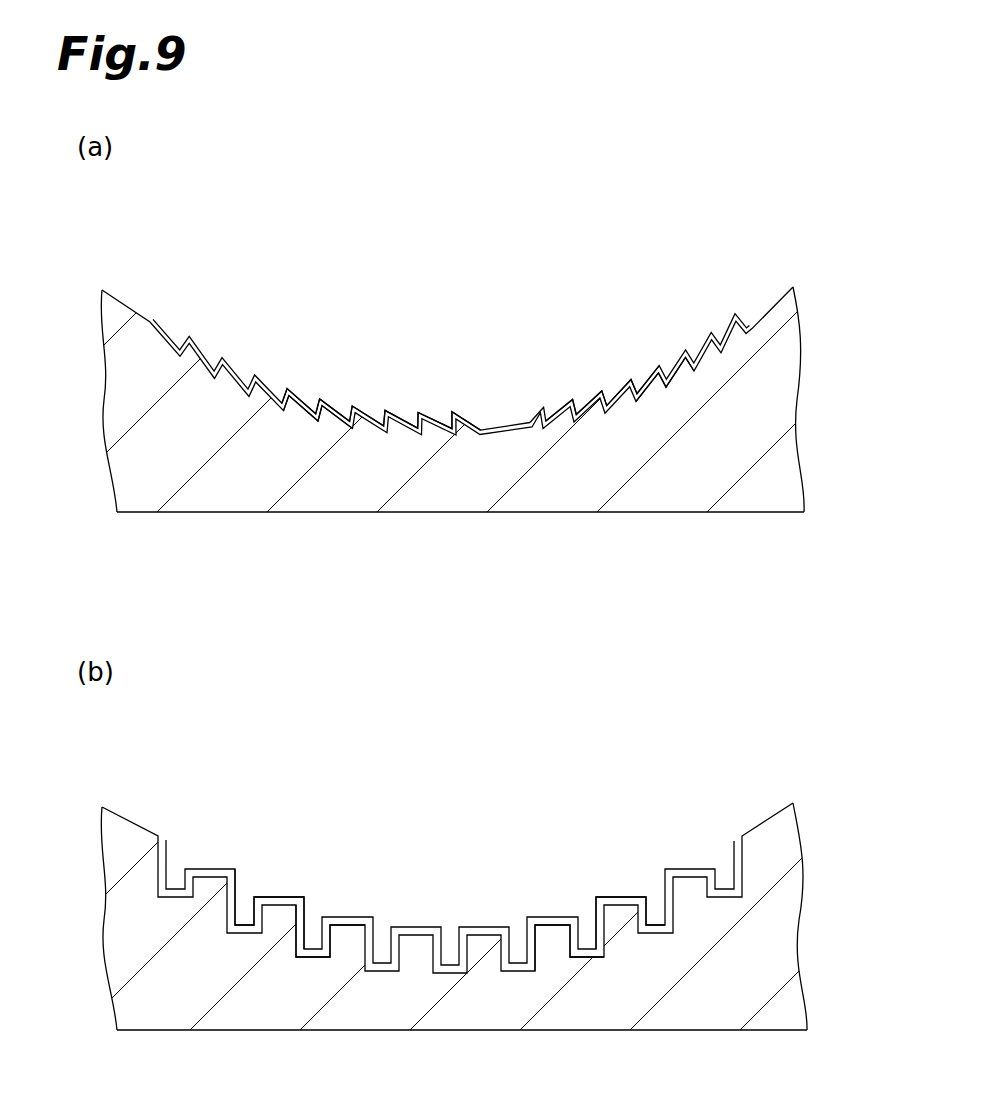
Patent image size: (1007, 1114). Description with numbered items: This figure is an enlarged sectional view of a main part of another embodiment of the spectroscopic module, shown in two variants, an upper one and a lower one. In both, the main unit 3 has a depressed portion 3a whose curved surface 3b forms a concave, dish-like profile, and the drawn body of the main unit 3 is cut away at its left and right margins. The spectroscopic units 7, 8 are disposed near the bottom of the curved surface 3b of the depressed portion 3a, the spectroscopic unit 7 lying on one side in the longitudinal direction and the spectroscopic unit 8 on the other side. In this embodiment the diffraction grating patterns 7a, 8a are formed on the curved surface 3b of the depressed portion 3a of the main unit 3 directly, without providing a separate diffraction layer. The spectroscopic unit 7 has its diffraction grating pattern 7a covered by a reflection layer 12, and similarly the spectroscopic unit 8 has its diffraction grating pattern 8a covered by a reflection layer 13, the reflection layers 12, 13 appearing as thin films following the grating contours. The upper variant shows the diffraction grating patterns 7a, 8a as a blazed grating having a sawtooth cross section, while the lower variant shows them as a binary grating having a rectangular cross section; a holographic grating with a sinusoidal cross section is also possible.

The main unit 3 is at (780, 403).
The depressed portion 3a is at (768, 300).
The curved surface 3b is at (133, 303).
The spectroscopic unit 7 is at (273, 367).
The diffraction grating pattern 7a is at (374, 417).
The spectroscopic unit 8 is at (685, 337).
The diffraction grating pattern 8a is at (609, 380).
The reflection layer 12 is at (300, 400).
The reflection layer 13 is at (668, 367).